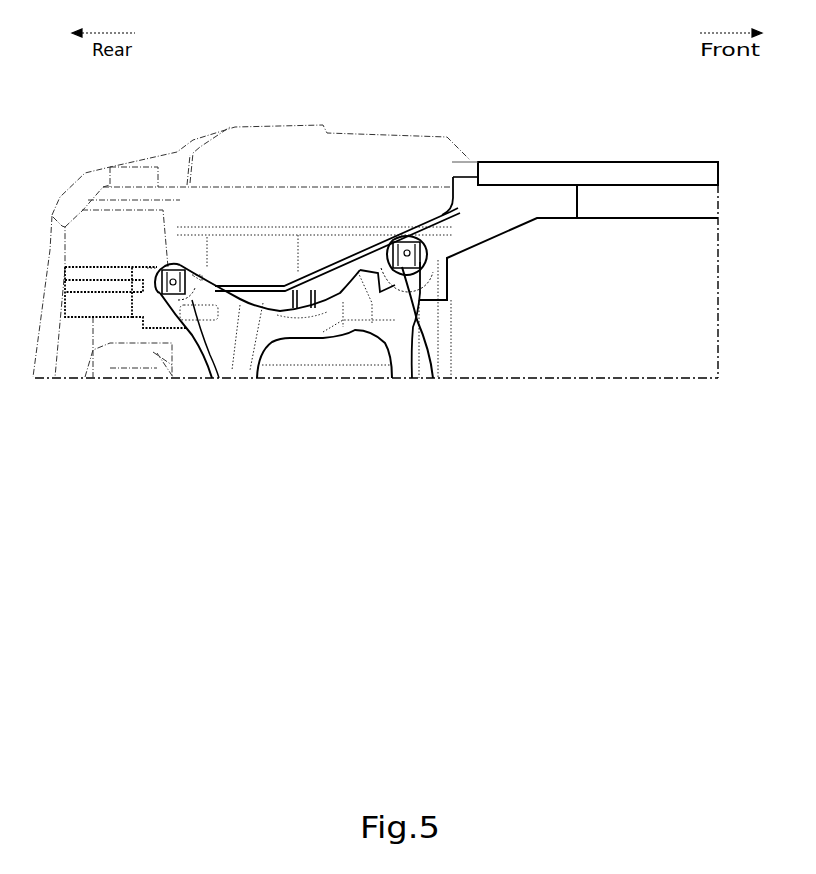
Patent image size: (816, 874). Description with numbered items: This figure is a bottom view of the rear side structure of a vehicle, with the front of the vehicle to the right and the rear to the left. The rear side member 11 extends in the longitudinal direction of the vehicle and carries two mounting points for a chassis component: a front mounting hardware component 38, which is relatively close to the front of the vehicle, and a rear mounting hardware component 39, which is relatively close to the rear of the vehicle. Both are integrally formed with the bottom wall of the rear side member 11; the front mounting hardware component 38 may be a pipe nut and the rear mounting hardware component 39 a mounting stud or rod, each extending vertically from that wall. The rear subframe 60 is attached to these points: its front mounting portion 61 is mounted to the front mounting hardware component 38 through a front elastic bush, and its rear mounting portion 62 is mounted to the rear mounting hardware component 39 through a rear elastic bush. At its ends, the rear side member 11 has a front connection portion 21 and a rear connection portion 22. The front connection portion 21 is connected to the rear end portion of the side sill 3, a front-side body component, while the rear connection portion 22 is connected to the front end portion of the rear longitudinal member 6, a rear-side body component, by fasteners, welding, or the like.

The side sill 3 is at (650, 203).
The front connection portion 21 is at (540, 222).
The rear connection portion 22 is at (157, 261).
The rear side member 11 is at (318, 264).
The rear longitudinal member 6 is at (109, 308).
The rear subframe 60 is at (310, 323).
The front mounting portion 61 is at (407, 236).
The rear mounting portion 62 is at (175, 263).
The front mounting hardware component 38 is at (433, 378).
The rear mounting hardware component 39 is at (173, 290).